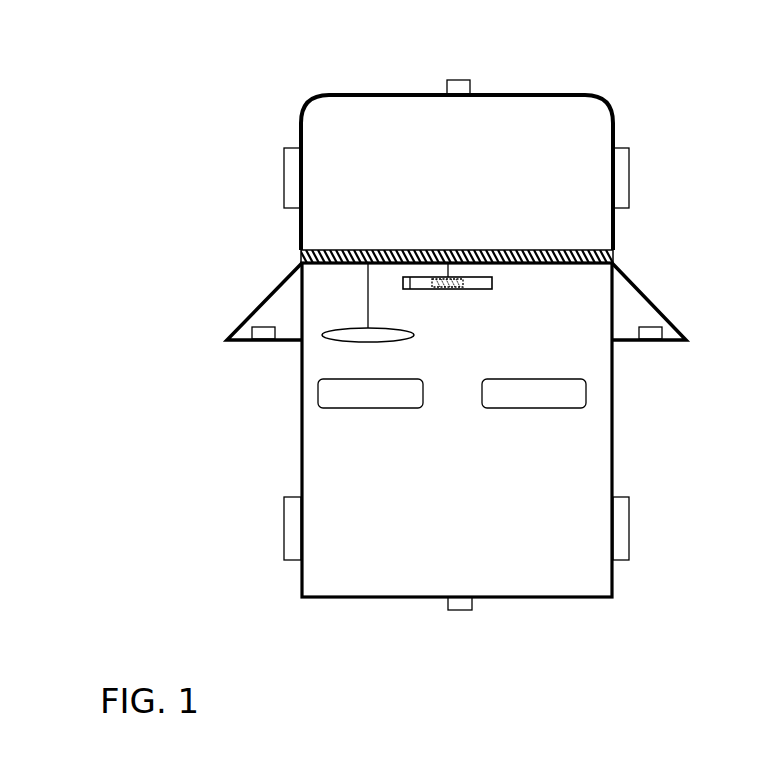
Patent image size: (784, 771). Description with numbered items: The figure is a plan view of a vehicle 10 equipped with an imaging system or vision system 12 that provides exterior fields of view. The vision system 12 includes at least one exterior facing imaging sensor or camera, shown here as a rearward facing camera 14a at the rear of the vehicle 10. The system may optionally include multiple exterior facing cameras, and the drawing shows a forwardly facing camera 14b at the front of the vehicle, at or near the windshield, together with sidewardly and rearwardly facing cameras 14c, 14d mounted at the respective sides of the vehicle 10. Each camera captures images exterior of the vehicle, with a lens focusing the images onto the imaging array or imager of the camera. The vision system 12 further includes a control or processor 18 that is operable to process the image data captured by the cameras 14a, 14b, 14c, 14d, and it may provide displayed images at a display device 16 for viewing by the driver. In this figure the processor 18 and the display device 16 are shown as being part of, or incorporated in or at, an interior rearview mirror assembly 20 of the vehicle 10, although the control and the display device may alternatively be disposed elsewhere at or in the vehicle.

The vehicle 10 is at (230, 102).
The vision system 12 is at (411, 627).
The rearward facing camera 14a is at (463, 610).
The forwardly facing camera 14b is at (455, 82).
The sidewardly/rearwardly facing camera 14c is at (263, 332).
The sidewardly/rearwardly facing camera 14d is at (652, 335).
The display device 16 is at (420, 282).
The control or processor 18 is at (455, 283).
The interior rearview mirror assembly 20 is at (492, 281).